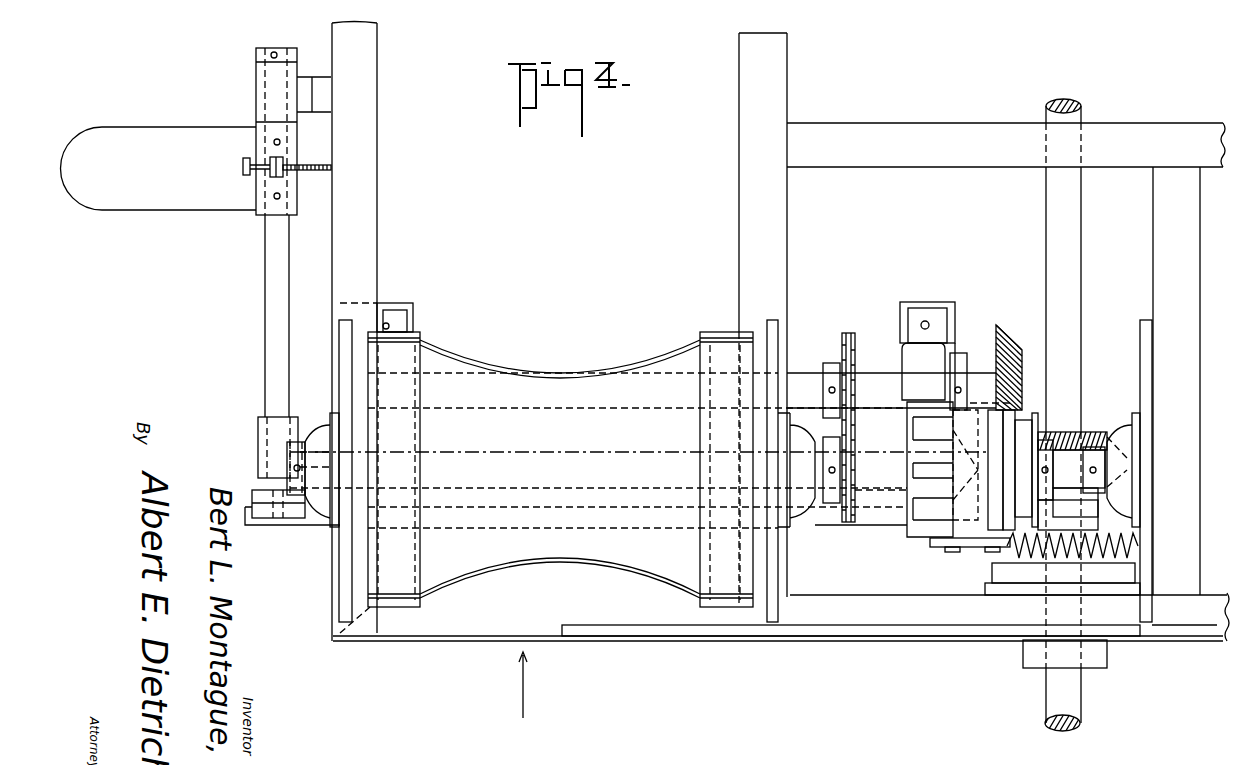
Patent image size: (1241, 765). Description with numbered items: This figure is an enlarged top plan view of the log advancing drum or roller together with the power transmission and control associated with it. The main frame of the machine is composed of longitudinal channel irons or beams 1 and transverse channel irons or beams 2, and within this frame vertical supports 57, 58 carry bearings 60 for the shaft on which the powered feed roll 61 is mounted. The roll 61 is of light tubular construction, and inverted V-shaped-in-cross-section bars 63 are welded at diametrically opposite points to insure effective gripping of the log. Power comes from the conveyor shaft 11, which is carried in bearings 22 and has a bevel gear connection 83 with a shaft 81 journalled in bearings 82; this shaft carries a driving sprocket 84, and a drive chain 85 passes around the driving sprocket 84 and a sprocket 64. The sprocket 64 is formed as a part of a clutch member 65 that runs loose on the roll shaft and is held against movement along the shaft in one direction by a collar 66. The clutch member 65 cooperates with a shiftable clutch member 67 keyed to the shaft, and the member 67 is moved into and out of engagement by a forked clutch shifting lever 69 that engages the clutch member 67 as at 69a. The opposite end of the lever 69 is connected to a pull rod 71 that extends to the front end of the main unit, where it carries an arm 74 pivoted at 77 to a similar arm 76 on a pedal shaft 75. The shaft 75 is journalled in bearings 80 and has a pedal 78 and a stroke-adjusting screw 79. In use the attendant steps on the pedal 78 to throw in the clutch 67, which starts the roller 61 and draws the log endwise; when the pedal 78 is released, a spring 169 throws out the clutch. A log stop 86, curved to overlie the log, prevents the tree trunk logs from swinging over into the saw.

The longitudinal channel irons or beams 1 is at (448, 646).
The transverse channel irons or beams 2 is at (1203, 265).
The conveyor shaft 11 is at (1070, 227).
The bearings 22 is at (1103, 575).
The vertical support 57 is at (340, 334).
The vertical support 58 is at (1152, 342).
The bearings 60 is at (1160, 501).
The powered feed roll 61 is at (600, 390).
The inverted V-shaped bars 63 is at (550, 363).
The sprocket 64 is at (862, 483).
The clutch member 65 is at (915, 440).
The collar 66 is at (833, 503).
The shiftable clutch member 67 is at (945, 508).
The forked clutch shifting lever 69 is at (975, 530).
The lever engagement portion 69a is at (998, 530).
The pull rod 71 is at (323, 528).
The arm 74 is at (262, 518).
The pedal shaft 75 is at (265, 345).
The arm 76 is at (252, 494).
The pivot 77 is at (275, 528).
The pedal 78 is at (126, 202).
The stroke-adjusting screw 79 is at (248, 166).
The bearings 80 is at (258, 433).
The shaft 81 is at (868, 378).
The bearings 82 is at (930, 350).
The bevel gear connection 83 is at (1095, 430).
The driving sprocket 84 is at (830, 365).
The drive chain 85 is at (848, 340).
The log stop 86 is at (840, 637).
The spring 169 is at (1135, 547).